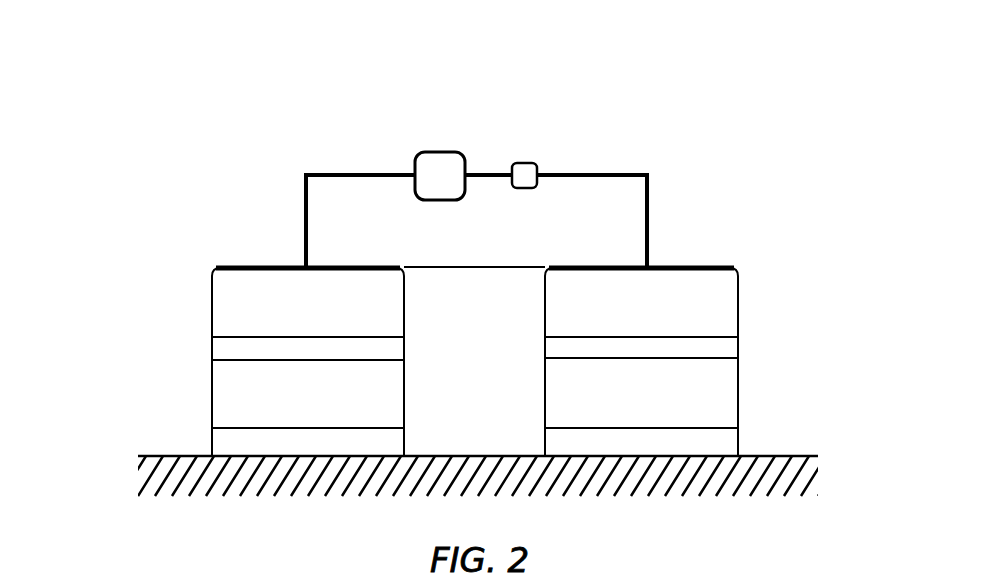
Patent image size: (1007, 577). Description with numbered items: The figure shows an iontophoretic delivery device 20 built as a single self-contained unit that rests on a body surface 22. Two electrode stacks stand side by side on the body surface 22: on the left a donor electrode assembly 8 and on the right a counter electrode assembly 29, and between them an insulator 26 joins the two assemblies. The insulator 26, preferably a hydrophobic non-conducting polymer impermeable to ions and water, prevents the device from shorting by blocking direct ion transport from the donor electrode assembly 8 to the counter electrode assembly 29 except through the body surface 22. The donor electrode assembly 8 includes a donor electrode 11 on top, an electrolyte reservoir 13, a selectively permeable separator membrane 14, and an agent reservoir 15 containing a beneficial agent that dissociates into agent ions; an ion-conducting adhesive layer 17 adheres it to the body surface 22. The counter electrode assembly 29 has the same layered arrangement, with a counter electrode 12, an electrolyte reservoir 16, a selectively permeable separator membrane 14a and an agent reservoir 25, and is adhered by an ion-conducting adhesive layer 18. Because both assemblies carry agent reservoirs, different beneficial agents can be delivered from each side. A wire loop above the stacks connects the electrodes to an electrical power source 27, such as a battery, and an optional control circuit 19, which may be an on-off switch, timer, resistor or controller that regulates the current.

The donor electrode assembly 8 is at (196, 242).
The donor electrode 11 is at (241, 299).
The counter electrode 12 is at (715, 279).
The electrolyte reservoir 13 is at (267, 303).
The selectively permeable separator membrane 14 is at (252, 348).
The selectively permeable separator membrane 14a is at (705, 345).
The agent reservoir 15 is at (263, 398).
The electrolyte reservoir 16 is at (710, 303).
The ion-conducting adhesive layer 17 is at (250, 438).
The ion-conducting adhesive layer 18 is at (703, 438).
The control circuit 19 is at (527, 163).
The iontophoretic delivery device 20 is at (313, 150).
The body surface 22 is at (767, 485).
The agent reservoir 25 is at (707, 387).
The insulator 26 is at (447, 327).
The electrical power source 27 is at (438, 152).
The counter electrode assembly 29 is at (742, 240).